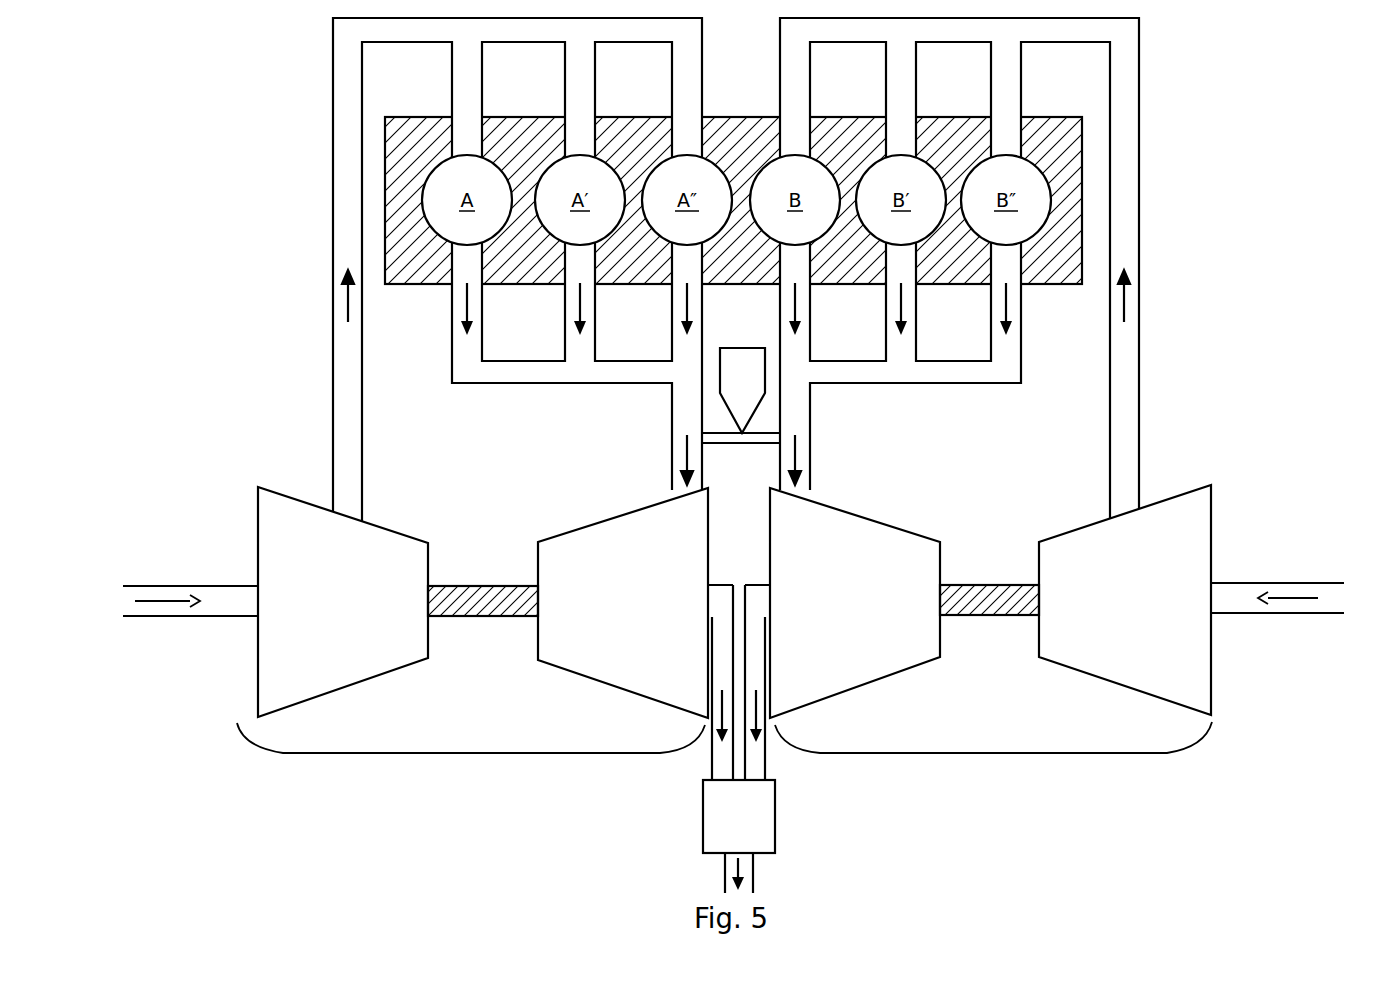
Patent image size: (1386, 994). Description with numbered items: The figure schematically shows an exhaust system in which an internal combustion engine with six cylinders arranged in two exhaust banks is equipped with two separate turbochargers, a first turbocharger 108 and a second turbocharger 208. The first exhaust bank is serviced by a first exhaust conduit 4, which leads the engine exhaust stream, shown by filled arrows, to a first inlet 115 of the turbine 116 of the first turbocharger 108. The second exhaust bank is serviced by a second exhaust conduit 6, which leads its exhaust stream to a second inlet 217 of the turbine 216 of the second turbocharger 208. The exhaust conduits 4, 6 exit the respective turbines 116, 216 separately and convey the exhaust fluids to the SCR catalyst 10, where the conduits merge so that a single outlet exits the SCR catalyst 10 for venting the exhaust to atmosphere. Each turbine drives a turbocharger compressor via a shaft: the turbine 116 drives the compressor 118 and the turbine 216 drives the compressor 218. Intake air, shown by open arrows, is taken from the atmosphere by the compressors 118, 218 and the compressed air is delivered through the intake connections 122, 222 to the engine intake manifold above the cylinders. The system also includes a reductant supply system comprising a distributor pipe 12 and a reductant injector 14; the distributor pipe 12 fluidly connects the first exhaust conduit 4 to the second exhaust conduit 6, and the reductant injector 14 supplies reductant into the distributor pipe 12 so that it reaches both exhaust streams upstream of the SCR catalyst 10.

The first exhaust conduit 4 is at (468, 348).
The second exhaust conduit 6 is at (959, 376).
The SCR catalyst 10 is at (728, 828).
The distributor pipe 12 is at (733, 438).
The reductant injector 14 is at (731, 403).
The first turbocharger 108 is at (473, 753).
The first inlet 115 is at (687, 492).
The turbine of the first turbocharger 116 is at (608, 612).
The compressor of the first turbocharger 118 is at (327, 612).
The intake manifold connection of the first turbocharger 122 is at (347, 117).
The second turbocharger 208 is at (993, 753).
The turbine of the second turbocharger 216 is at (840, 612).
The second inlet 217 is at (793, 490).
The compressor of the second turbocharger 218 is at (1110, 610).
The intake manifold connection of the second turbocharger 222 is at (1128, 140).